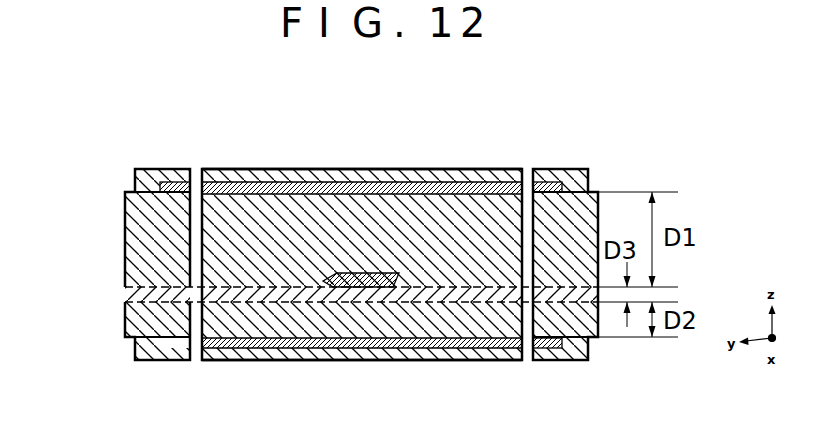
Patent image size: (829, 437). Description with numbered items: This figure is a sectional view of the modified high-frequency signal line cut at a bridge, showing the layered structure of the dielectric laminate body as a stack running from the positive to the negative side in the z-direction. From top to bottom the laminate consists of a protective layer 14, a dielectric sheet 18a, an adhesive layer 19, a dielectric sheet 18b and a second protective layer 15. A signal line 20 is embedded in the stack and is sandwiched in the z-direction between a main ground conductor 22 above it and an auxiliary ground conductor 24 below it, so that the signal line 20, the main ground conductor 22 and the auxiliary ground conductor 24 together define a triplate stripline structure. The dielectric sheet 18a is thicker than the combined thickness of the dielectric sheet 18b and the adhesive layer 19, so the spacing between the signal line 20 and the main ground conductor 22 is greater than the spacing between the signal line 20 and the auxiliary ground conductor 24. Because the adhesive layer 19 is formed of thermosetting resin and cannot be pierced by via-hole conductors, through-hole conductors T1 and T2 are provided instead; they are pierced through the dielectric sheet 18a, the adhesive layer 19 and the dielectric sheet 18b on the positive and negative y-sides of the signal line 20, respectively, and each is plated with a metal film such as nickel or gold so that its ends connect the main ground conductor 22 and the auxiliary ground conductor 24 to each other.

The protective layer 14 is at (345, 169).
The protective layer 15 is at (352, 361).
The dielectric sheet 18a is at (130, 228).
The dielectric sheet 18b is at (130, 328).
The adhesive layer 19 is at (133, 291).
The signal line 20 is at (331, 273).
The main ground conductor 22 is at (441, 183).
The auxiliary ground conductor 24 is at (442, 361).
The through-hole conductors T1 is at (182, 174).
The through-hole conductors T2 is at (516, 174).